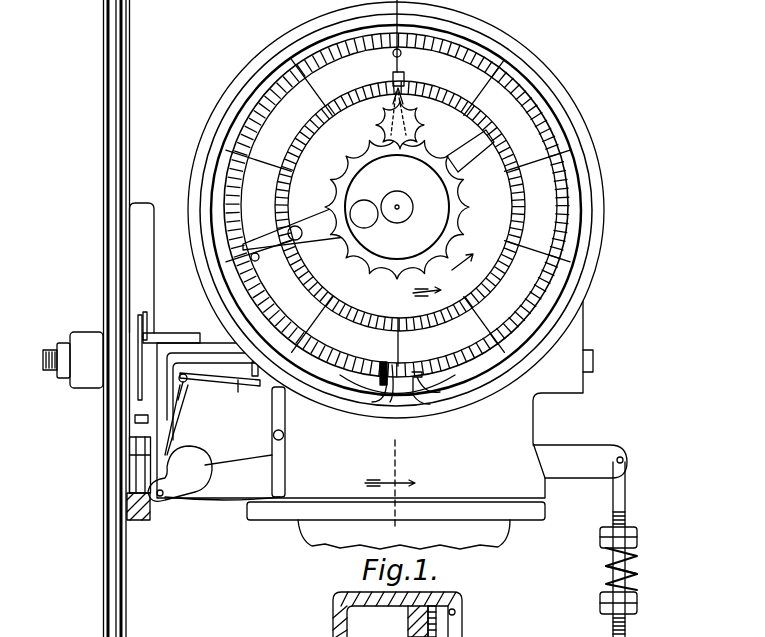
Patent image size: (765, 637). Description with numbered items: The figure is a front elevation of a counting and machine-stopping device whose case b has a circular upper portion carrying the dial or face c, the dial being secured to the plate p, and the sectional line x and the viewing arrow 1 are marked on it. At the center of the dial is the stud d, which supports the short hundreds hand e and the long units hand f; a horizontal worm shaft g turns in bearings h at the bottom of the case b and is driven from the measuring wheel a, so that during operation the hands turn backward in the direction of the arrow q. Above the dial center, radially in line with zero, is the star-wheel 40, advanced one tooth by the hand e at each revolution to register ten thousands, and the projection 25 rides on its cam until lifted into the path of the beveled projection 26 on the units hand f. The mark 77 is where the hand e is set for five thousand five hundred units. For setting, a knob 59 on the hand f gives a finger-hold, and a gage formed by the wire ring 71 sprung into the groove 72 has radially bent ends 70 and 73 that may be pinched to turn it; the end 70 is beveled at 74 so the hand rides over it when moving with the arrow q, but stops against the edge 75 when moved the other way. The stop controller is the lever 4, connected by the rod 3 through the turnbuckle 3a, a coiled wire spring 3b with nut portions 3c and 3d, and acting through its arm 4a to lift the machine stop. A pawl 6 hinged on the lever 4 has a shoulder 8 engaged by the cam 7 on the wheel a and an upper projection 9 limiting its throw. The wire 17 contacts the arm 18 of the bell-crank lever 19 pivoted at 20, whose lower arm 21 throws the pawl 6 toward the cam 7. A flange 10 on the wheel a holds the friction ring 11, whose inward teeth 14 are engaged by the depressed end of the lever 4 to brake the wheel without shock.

The wheel a is at (103, 176).
The rim or flange 10 is at (147, 204).
The arrow 1 is at (20, 292).
The cam 7 is at (147, 338).
The bearings h is at (196, 340).
The horizontal shaft g is at (44, 365).
The upper projection 9 is at (145, 398).
The shoulder 8 is at (140, 423).
The friction ring 11 is at (131, 468).
The teeth or stops 14 is at (130, 491).
The pawl 6 is at (180, 473).
The controller lever 4 is at (370, 400).
The pivot 20 is at (186, 381).
The bell-crank lever 19 is at (178, 399).
The arm 18 is at (239, 390).
The wire 17 is at (252, 369).
The lower arm 21 is at (176, 428).
The knob 59 is at (289, 245).
The long hand f is at (294, 226).
The stud d is at (400, 209).
The short hand e is at (470, 151).
The arrow q is at (443, 275).
The star-wheel 40 is at (400, 118).
The projection 25 is at (404, 92).
The dial or face c is at (578, 172).
The case b is at (600, 213).
The mark 77 is at (397, 205).
The bevel 74 is at (379, 370).
The gage 70 is at (382, 373).
The edge 75 is at (385, 386).
The end of wire 73 is at (413, 382).
The wire ring 71 is at (492, 376).
The arm 4a is at (580, 461).
The rod 3 is at (628, 500).
The nut portion 3c is at (638, 538).
The turnbuckle 3a is at (640, 573).
The coiled wire spring 3b is at (612, 583).
The nut portion 3d is at (638, 612).
The section line x is at (396, 494).
The groove 72 is at (450, 604).
The plate p is at (410, 627).
The projection 26 is at (462, 622).